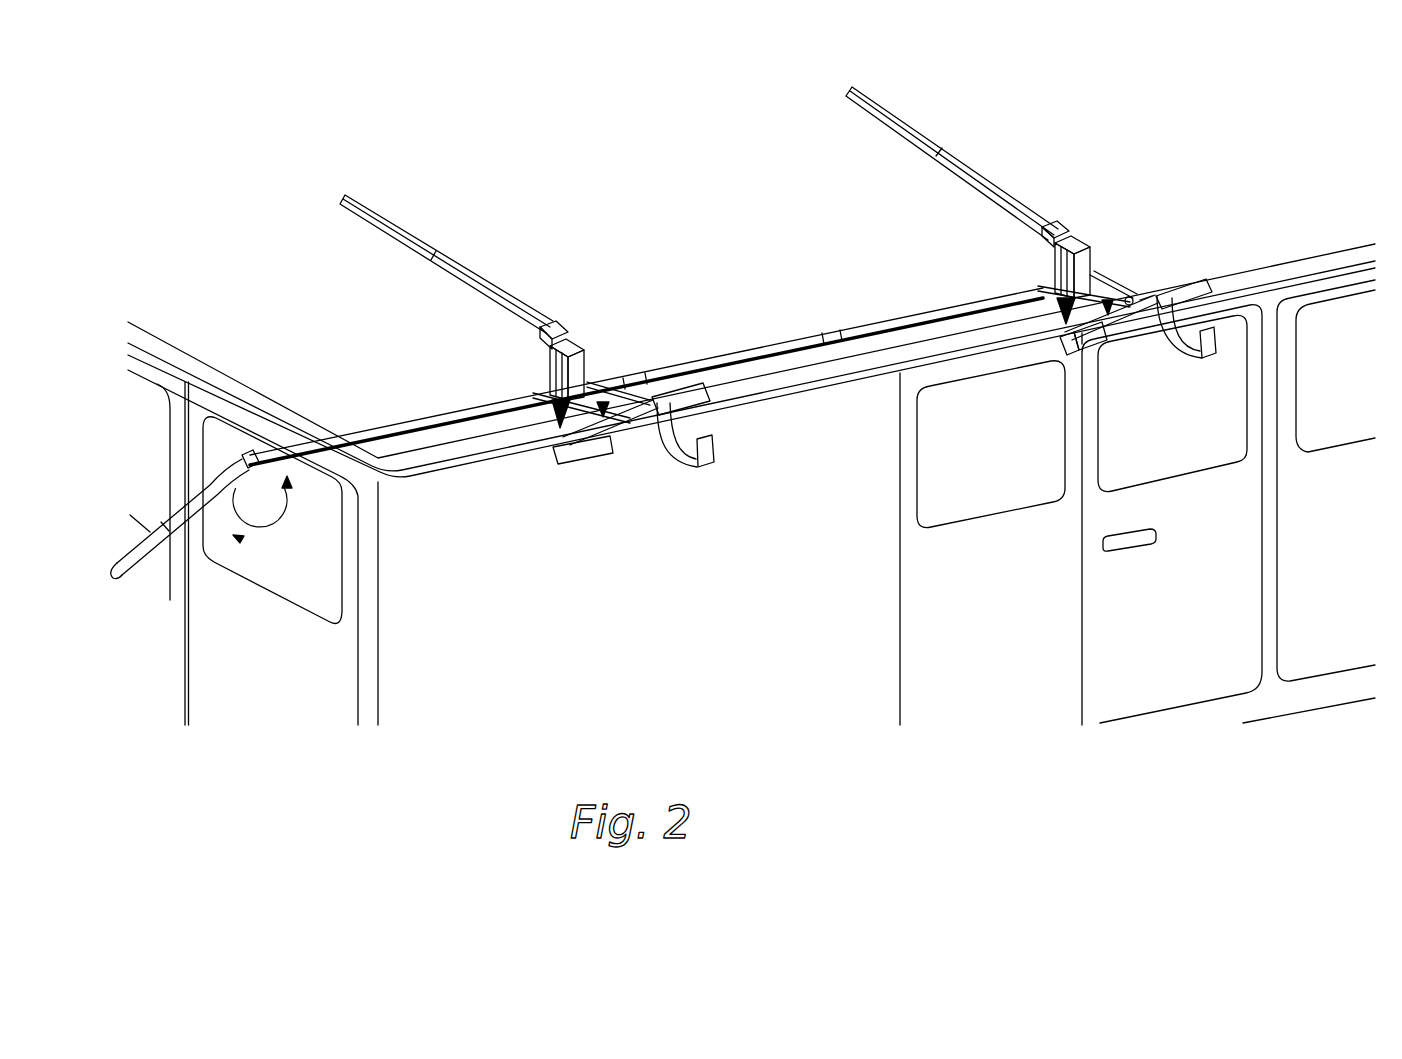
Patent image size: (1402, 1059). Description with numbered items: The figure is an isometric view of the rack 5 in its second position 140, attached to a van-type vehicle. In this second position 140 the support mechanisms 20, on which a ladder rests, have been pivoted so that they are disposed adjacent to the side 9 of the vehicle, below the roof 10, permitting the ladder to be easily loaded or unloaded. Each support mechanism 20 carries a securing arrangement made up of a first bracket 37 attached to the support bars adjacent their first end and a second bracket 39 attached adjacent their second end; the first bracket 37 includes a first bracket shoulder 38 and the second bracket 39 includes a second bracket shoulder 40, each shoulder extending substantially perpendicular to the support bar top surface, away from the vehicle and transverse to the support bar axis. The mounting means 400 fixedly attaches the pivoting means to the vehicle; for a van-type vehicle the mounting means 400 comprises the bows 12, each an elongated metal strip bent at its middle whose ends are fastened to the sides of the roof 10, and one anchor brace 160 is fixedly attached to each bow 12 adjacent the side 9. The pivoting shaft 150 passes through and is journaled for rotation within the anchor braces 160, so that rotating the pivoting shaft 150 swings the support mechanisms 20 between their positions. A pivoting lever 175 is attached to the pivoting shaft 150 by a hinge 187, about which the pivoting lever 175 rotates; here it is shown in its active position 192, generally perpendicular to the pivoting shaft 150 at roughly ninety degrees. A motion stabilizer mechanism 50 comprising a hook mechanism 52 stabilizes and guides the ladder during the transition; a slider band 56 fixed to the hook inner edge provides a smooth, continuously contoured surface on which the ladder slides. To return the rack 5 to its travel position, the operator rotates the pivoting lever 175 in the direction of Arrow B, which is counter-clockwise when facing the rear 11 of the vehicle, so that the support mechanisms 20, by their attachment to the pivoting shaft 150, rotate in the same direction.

The rack 5 is at (743, 386).
The side 9 is at (490, 565).
The roof 10 is at (386, 338).
The rear 11 is at (266, 680).
The bow 12 is at (399, 210).
The support mechanism 20 is at (619, 503).
The first bracket 37 is at (1150, 292).
The first bracket shoulder 38 is at (1203, 280).
The second bracket 39 is at (1058, 346).
The second bracket shoulder 40 is at (1110, 340).
The motion stabilizer mechanism 50 is at (940, 411).
The hook mechanism 52 is at (686, 468).
The slider band 56 is at (682, 421).
The second position 140 is at (672, 330).
The pivoting shaft 150 is at (983, 294).
The anchor brace 160 is at (549, 367).
The pivoting lever 175 is at (140, 553).
The hinge 187 is at (245, 455).
The active position 192 is at (242, 540).
The mounting means 400 is at (883, 382).
The Arrow B is at (283, 507).